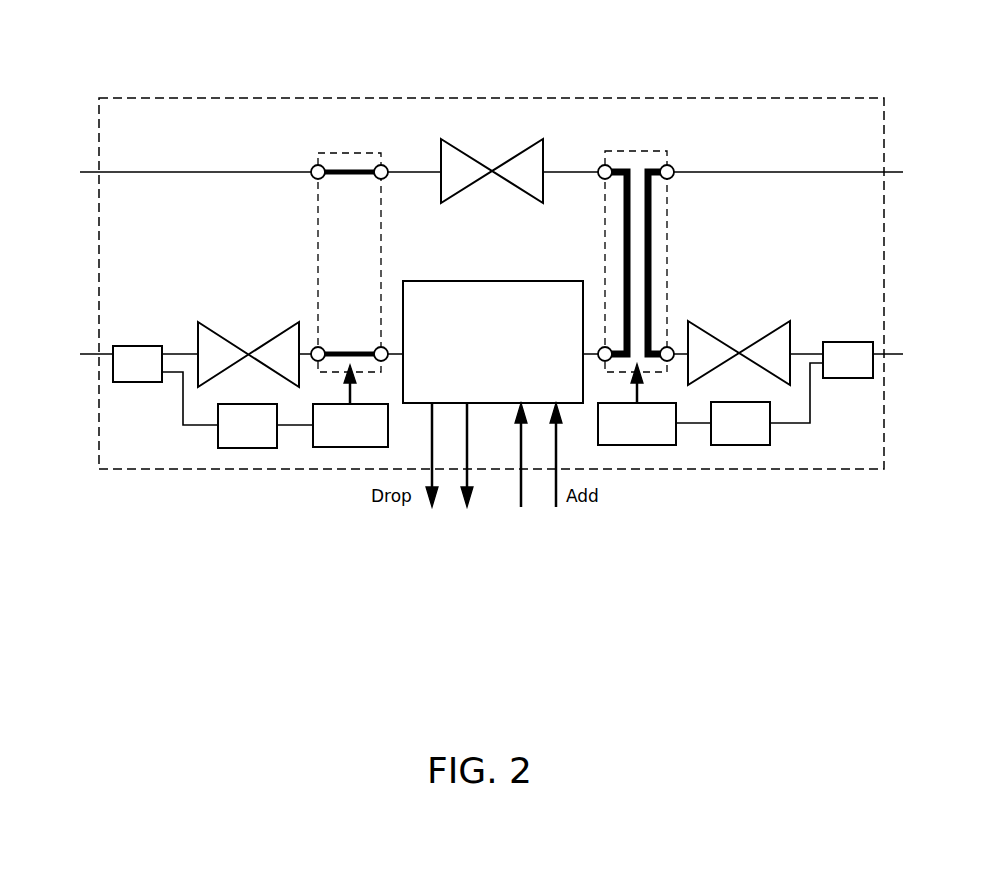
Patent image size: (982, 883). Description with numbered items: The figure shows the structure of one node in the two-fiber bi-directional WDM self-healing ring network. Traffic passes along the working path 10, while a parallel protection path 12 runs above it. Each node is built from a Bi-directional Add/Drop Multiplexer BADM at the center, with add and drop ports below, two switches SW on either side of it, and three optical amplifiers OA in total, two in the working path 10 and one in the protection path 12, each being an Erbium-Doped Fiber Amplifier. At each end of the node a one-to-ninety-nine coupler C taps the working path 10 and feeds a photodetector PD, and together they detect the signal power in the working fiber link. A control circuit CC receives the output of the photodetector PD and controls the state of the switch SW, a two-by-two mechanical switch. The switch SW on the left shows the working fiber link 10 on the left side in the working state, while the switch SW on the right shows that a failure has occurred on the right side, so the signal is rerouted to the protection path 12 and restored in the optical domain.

The working path 10 is at (80, 354).
The protection path 12 is at (167, 172).
The switch SW is at (343, 153).
The optical amplifier OA is at (494, 262).
The coupler C is at (493, 362).
The Bi-directional Add/Drop Multiplexer BADM is at (493, 342).
The photodetector PD is at (494, 425).
The control circuit CC is at (494, 425).